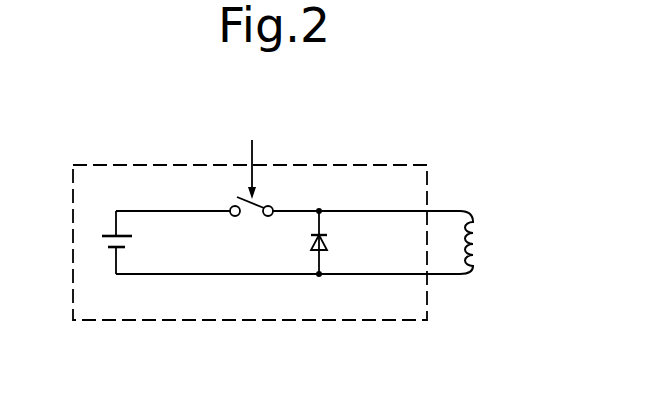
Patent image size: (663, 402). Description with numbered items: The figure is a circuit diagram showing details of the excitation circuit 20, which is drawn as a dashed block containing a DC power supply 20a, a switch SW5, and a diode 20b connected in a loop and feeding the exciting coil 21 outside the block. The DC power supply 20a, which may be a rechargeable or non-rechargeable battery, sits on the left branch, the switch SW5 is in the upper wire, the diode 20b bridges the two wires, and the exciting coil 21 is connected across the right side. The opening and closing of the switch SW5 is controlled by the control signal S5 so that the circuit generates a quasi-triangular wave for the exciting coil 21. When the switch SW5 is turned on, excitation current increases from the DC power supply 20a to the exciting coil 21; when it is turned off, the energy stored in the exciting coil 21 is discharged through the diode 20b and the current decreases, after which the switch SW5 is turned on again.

The excitation circuit 20 is at (238, 320).
The DC power supply 20a is at (130, 241).
The diode 20b is at (345, 242).
The exciting coil 21 is at (473, 245).
The switch SW5 is at (253, 225).
The control signal S5 is at (253, 153).